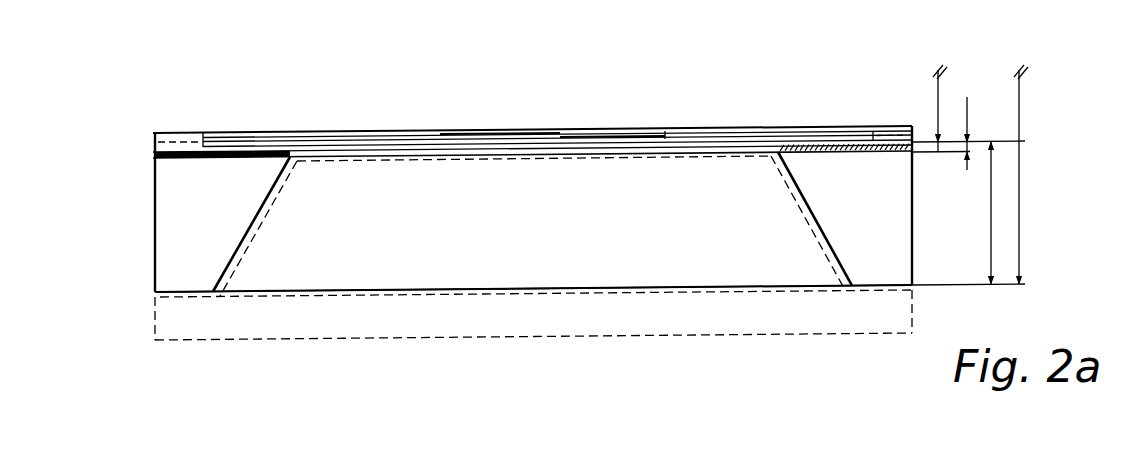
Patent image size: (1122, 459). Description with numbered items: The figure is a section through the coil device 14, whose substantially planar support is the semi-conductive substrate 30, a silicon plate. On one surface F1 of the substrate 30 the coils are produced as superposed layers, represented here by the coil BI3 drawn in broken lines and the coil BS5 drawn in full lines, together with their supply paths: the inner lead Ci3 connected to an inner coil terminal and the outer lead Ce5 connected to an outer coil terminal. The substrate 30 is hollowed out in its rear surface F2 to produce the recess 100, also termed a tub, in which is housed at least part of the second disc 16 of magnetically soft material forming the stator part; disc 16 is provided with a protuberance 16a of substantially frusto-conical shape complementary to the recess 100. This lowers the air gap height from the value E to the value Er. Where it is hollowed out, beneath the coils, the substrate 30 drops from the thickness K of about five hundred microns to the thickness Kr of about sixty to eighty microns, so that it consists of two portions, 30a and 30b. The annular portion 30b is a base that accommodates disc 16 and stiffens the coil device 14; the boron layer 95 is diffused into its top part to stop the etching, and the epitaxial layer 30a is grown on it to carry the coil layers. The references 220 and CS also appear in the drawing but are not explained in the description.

The semi-conductive substrate 30 is at (140, 225).
The epitaxial layer 30a is at (155, 153).
The base portion 30b is at (172, 247).
The coil device 14 is at (360, 128).
The boron layer 95 is at (205, 152).
The surface of the substrate F1 is at (238, 141).
The inner lead Ci3 is at (276, 137).
The coil BI3 is at (458, 136).
The coil BS5 is at (643, 131).
The outer lead Ce5 is at (798, 128).
The second disc 16 is at (833, 315).
The protuberance 16a is at (260, 222).
The recess 100 is at (662, 250).
The rear surface F2 is at (187, 294).
The lower dashed region 220 is at (550, 374).
The cross section reference CS is at (970, 300).
The air gap height E is at (1018, 153).
The reduced air gap height Er is at (944, 87).
The substrate thickness K is at (1003, 213).
The reduced substrate thickness Kr is at (984, 131).